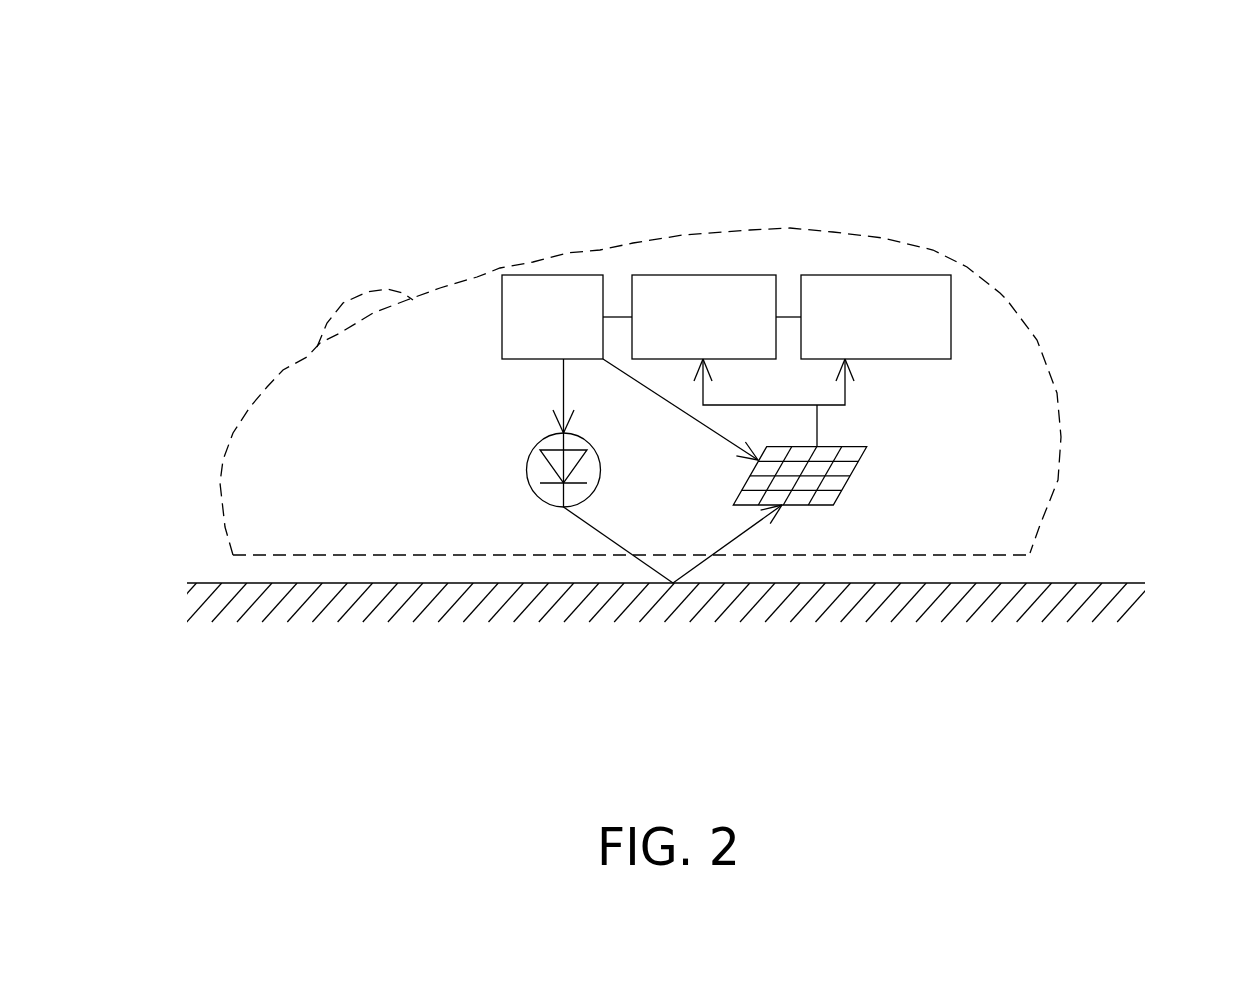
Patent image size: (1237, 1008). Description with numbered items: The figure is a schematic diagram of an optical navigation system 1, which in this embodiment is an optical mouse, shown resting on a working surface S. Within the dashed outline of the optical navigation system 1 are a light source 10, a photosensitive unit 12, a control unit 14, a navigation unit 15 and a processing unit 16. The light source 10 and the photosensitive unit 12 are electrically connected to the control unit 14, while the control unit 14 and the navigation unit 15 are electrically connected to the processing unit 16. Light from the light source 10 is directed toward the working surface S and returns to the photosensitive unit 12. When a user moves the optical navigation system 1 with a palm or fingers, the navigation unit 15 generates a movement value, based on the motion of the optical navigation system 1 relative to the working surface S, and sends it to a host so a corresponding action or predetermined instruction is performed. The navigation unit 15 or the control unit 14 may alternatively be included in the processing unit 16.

The optical navigation system 1 is at (338, 193).
The light source 10 is at (548, 504).
The photosensitive unit 12 is at (855, 470).
The control unit 14 is at (548, 275).
The navigation unit 15 is at (840, 275).
The processing unit 16 is at (690, 275).
The working surface S is at (1092, 583).